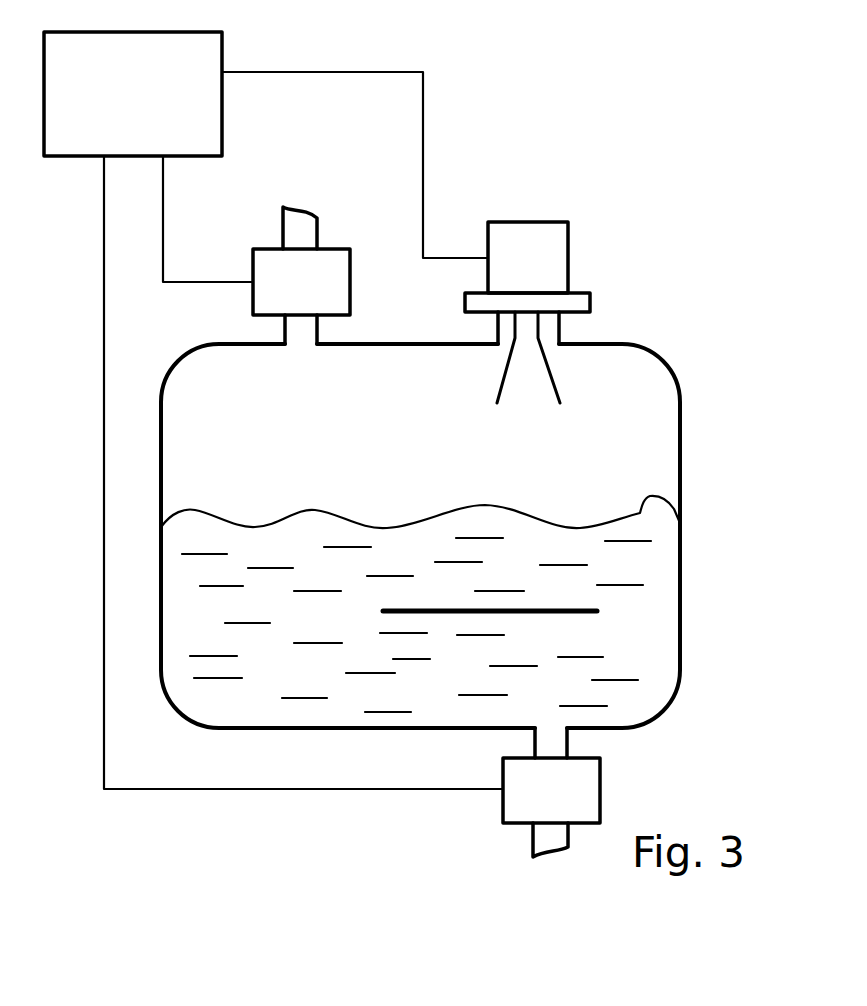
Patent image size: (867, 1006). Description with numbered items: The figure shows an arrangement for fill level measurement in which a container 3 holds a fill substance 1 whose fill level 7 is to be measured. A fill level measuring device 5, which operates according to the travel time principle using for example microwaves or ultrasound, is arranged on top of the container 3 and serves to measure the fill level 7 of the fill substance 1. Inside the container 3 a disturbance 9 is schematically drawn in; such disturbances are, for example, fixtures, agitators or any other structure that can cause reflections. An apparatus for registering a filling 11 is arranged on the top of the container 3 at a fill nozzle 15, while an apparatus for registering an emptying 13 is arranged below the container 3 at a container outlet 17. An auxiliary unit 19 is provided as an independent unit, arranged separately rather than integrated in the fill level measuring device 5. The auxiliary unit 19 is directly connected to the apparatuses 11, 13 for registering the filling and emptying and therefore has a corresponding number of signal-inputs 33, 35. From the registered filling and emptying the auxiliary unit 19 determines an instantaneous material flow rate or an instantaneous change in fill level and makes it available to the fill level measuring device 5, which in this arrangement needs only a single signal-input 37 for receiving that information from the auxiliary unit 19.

The fill substance 1 is at (272, 611).
The container 3 is at (683, 427).
The fill level measuring device 5 is at (537, 272).
The fill level 7 is at (650, 496).
The disturbance 9 is at (562, 613).
The apparatus for registering a filling 11 is at (314, 294).
The apparatus for registering an emptying 13 is at (537, 805).
The fill nozzle 15 is at (297, 335).
The container outlet 17 is at (533, 741).
The auxiliary unit 19 is at (146, 107).
The signal-input 33 is at (103, 159).
The signal-input 35 is at (164, 159).
The signal-input 37 is at (488, 258).